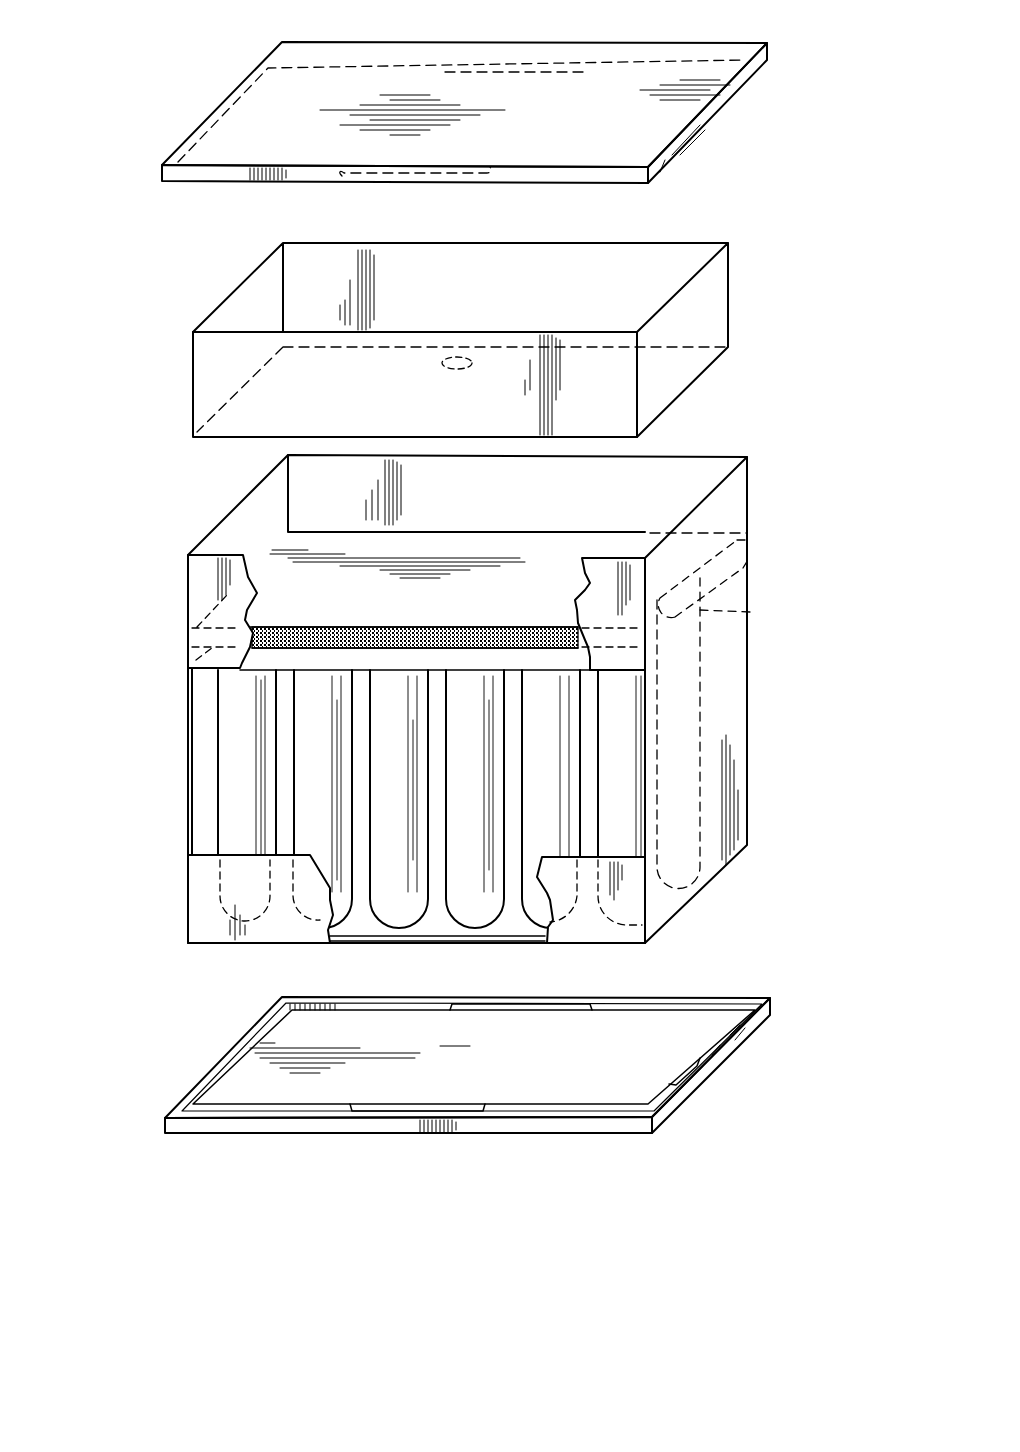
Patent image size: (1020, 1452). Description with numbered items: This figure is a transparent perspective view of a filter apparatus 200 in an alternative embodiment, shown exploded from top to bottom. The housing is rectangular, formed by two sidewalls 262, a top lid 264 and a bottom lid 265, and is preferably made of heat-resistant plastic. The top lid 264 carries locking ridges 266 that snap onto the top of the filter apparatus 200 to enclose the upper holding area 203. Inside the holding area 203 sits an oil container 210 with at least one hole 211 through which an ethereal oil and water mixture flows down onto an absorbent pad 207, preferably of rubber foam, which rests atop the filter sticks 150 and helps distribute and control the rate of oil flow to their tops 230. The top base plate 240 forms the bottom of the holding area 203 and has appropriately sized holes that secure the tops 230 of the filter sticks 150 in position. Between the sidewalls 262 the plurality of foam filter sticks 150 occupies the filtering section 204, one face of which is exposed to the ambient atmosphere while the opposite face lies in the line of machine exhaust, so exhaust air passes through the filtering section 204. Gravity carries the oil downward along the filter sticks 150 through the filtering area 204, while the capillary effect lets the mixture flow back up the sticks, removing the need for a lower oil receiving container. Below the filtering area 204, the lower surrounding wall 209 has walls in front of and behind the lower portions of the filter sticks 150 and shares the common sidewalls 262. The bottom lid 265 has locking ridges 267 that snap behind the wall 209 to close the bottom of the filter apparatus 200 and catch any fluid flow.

The filter apparatus 200 is at (103, 198).
The top lid 264 is at (288, 92).
The locking ridges 266 is at (398, 176).
The hole 211 is at (457, 355).
The oil container 210 is at (195, 376).
The upper holding area 203 is at (205, 576).
The absorbent pad 207 is at (283, 573).
The top base plate 240 is at (308, 670).
The sidewalls 262 is at (200, 725).
The filter sticks 150 is at (243, 748).
The tops of the filter sticks 230 is at (750, 615).
The filtering section 204 is at (520, 820).
The lower surrounding wall 209 is at (592, 937).
The bottom lid 265 is at (192, 1087).
The locking ridges 267 is at (360, 1113).